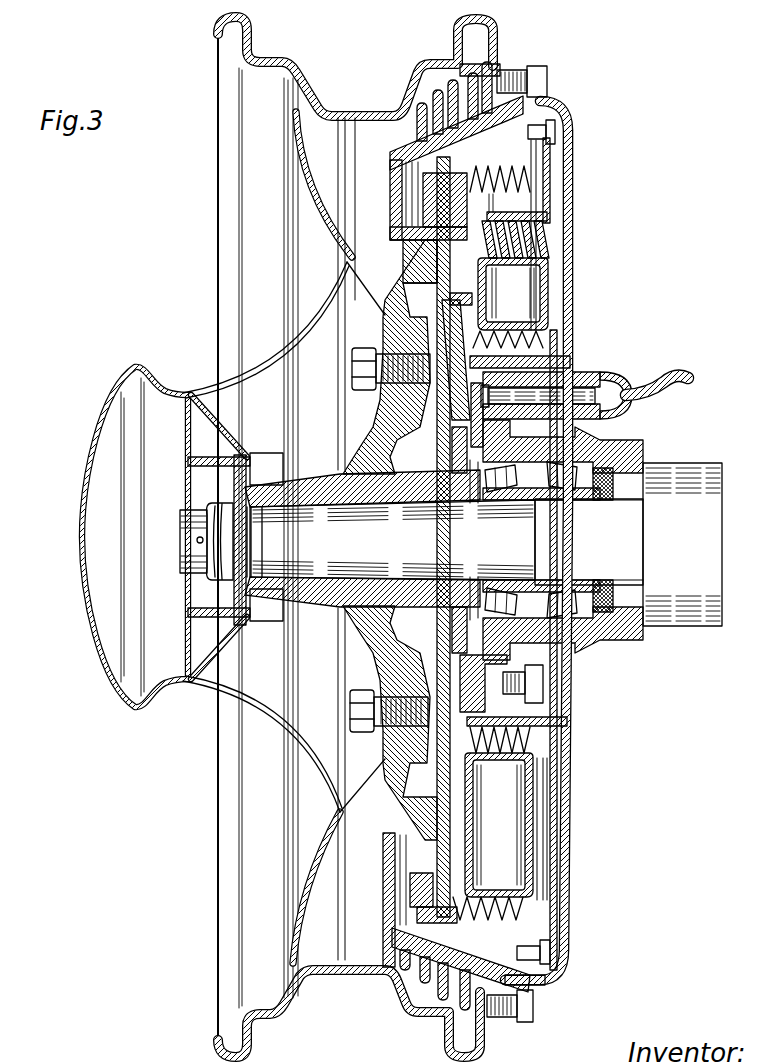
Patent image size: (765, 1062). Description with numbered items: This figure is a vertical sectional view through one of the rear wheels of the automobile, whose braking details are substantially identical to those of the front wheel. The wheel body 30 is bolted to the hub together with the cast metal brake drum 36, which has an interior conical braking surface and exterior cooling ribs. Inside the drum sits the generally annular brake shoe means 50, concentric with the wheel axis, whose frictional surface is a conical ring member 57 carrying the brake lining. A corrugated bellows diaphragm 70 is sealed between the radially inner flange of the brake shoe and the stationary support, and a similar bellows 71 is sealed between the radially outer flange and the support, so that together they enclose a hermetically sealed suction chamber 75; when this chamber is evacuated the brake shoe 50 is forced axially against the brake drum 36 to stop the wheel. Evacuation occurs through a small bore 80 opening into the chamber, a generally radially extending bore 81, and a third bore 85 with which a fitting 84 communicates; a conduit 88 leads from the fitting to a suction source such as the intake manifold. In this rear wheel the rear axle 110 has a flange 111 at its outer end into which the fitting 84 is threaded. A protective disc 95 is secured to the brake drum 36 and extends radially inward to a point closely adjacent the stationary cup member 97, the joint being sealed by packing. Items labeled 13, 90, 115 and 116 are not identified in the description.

The wheel rim 13 is at (215, 908).
The wheel body 30 is at (348, 805).
The brake drum 36 is at (392, 878).
The brake shoe means 50 is at (522, 878).
The conical ring member 57 is at (563, 973).
The bellows diaphragm 70 is at (530, 717).
The bellows 71 is at (483, 918).
The suction chamber 75 is at (470, 292).
The small bore 80 is at (465, 322).
The radially extending bore 81 is at (447, 398).
The fitting 84 is at (598, 394).
The third bore 85 is at (453, 420).
The conduit 88 is at (673, 400).
The spring seat 90 is at (520, 213).
The disc 95 is at (572, 176).
The cup member 97 is at (557, 670).
The rear axle 110 is at (670, 466).
The flange 111 is at (550, 374).
The retainer 115 is at (443, 277).
The seal 116 is at (600, 466).